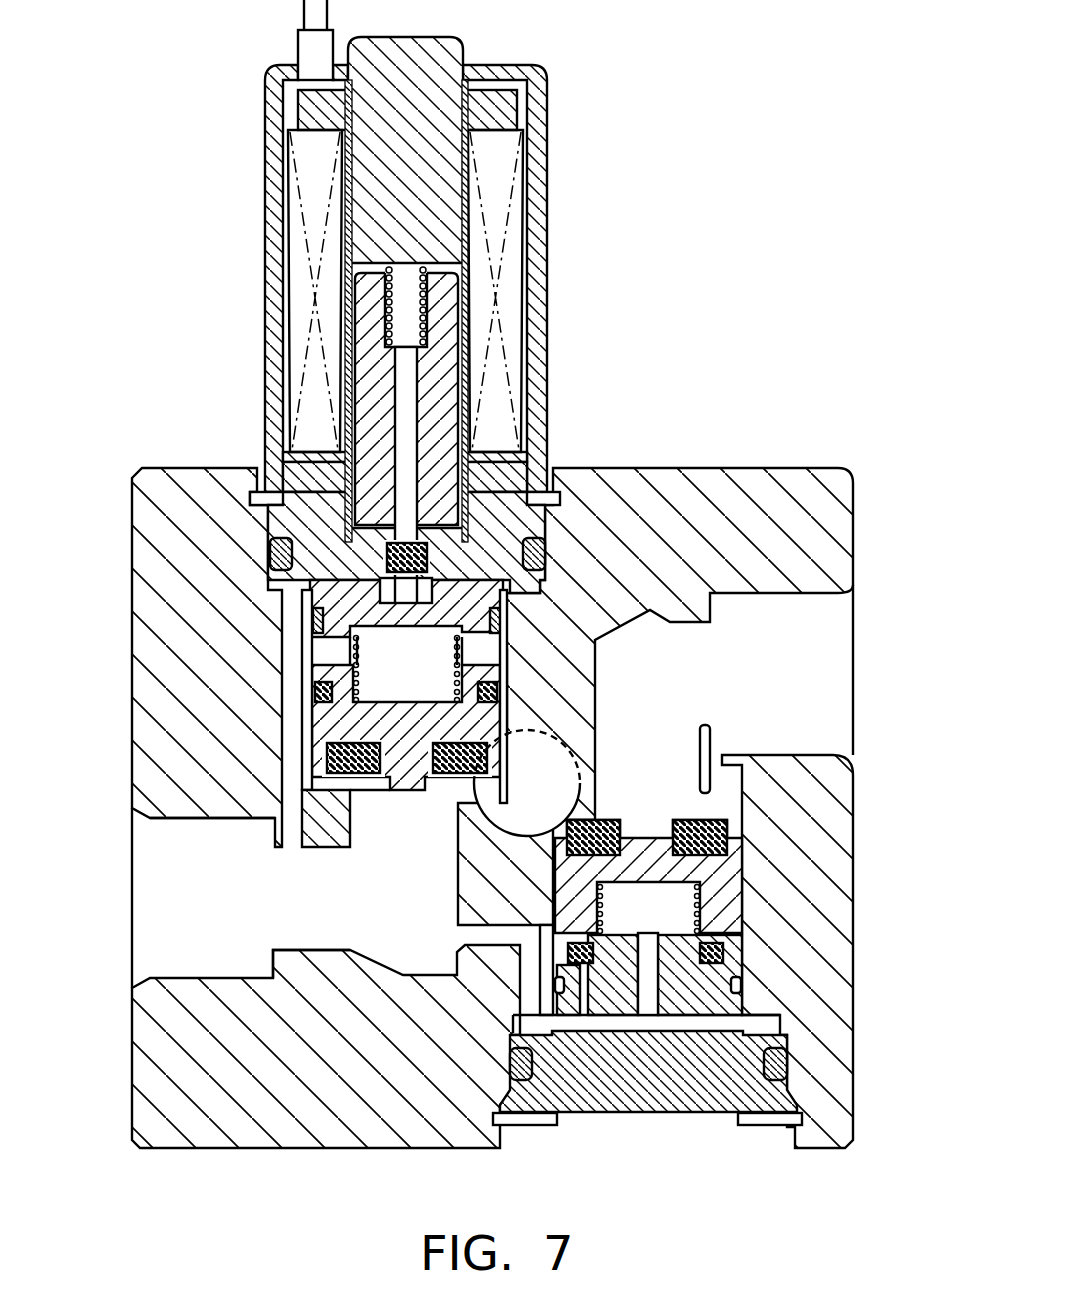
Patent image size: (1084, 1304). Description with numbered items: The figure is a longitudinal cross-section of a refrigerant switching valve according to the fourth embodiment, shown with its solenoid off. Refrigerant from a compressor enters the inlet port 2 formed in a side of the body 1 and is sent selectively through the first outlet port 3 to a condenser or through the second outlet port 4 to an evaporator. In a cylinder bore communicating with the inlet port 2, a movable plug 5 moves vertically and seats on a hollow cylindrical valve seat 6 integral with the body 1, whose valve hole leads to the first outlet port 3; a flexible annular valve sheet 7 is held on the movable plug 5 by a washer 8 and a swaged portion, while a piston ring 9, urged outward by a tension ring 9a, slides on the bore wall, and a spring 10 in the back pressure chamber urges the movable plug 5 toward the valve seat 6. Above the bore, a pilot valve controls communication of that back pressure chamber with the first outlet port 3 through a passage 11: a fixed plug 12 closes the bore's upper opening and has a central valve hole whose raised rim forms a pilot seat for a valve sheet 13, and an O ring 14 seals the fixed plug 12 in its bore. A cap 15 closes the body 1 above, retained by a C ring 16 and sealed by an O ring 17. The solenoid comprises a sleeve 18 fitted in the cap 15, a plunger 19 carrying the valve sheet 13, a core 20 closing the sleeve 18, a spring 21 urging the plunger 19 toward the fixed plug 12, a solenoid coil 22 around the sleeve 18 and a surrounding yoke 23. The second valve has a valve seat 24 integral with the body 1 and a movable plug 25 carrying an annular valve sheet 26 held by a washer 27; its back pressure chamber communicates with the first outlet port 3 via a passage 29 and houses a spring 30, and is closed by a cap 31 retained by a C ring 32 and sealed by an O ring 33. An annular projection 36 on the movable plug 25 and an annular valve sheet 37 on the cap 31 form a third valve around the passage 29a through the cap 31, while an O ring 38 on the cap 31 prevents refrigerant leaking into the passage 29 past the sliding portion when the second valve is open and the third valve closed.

The body 1 is at (853, 570).
The inlet port 2 is at (580, 722).
The first outlet port 3 is at (135, 905).
The second outlet port 4 is at (853, 680).
The movable plug 5 is at (350, 720).
The valve seat 6 is at (295, 780).
The valve sheet 7 is at (440, 790).
The washer 8 is at (375, 792).
The piston ring 9 is at (318, 690).
The tension ring 9a is at (358, 690).
The spring 10 is at (312, 640).
The passage 11 is at (330, 758).
The fixed plug 12 is at (313, 620).
The valve sheet 13 is at (268, 555).
The O ring 14 is at (503, 620).
The cap 15 is at (290, 517).
The C ring 16 is at (270, 490).
The O ring 17 is at (547, 553).
The sleeve 18 is at (457, 522).
The plunger 19 is at (450, 373).
The core 20 is at (410, 35).
The spring 21 is at (412, 300).
The solenoid coil 22 is at (518, 245).
The yoke 23 is at (548, 150).
The valve seat 24 is at (712, 780).
The movable plug 25 is at (735, 870).
The valve sheet 26 is at (585, 828).
The washer 27 is at (680, 825).
The passage 29 is at (530, 970).
The passage 29a is at (650, 1020).
The spring 30 is at (603, 910).
The cap 31 is at (612, 1115).
The C ring 32 is at (520, 1125).
The O ring 33 is at (790, 1065).
The annular projection 36 is at (745, 940).
The valve sheet 37 is at (742, 960).
The O ring 38 is at (742, 985).